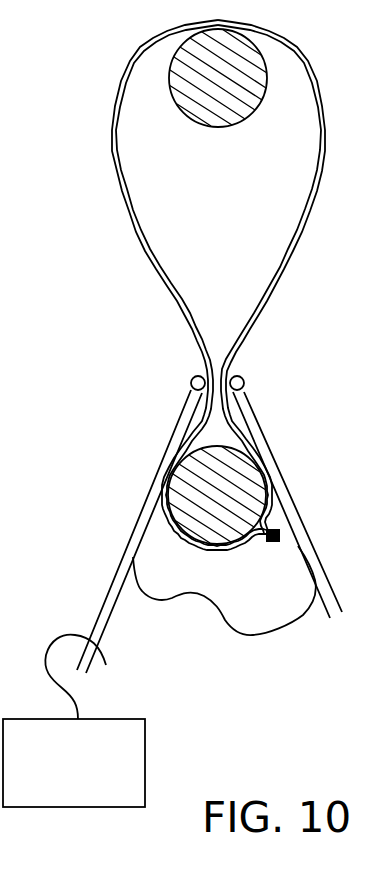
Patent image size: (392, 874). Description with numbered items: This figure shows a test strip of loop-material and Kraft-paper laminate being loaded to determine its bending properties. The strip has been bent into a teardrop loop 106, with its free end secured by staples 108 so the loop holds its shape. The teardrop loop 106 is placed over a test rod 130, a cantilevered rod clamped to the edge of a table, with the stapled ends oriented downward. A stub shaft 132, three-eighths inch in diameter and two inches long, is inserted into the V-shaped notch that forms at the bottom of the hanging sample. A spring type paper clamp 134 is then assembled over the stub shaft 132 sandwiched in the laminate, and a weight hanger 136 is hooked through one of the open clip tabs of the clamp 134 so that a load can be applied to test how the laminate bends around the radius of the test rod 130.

The teardrop loop 106 is at (120, 198).
The test rod 130 is at (190, 121).
The stub shaft 132 is at (187, 482).
The staples 108 is at (272, 542).
The spring type paper clamp 134 is at (250, 636).
The weight hanger 136 is at (146, 755).